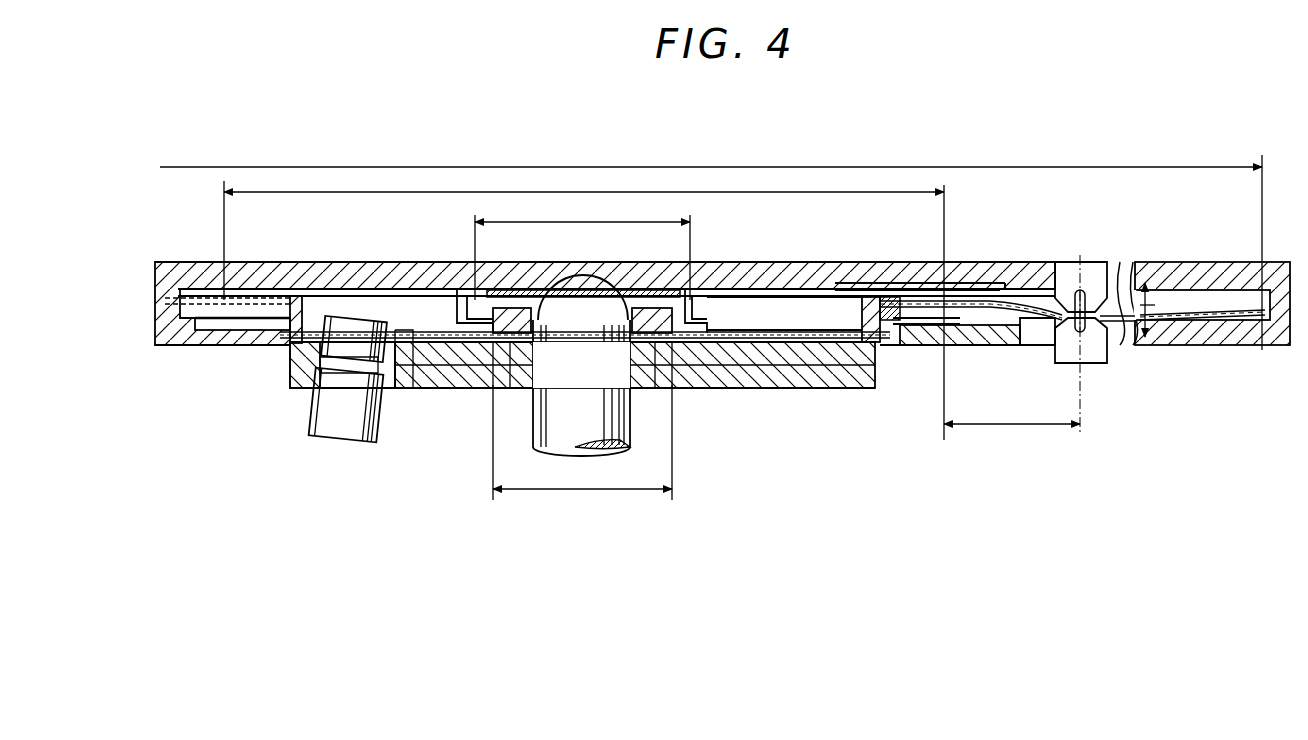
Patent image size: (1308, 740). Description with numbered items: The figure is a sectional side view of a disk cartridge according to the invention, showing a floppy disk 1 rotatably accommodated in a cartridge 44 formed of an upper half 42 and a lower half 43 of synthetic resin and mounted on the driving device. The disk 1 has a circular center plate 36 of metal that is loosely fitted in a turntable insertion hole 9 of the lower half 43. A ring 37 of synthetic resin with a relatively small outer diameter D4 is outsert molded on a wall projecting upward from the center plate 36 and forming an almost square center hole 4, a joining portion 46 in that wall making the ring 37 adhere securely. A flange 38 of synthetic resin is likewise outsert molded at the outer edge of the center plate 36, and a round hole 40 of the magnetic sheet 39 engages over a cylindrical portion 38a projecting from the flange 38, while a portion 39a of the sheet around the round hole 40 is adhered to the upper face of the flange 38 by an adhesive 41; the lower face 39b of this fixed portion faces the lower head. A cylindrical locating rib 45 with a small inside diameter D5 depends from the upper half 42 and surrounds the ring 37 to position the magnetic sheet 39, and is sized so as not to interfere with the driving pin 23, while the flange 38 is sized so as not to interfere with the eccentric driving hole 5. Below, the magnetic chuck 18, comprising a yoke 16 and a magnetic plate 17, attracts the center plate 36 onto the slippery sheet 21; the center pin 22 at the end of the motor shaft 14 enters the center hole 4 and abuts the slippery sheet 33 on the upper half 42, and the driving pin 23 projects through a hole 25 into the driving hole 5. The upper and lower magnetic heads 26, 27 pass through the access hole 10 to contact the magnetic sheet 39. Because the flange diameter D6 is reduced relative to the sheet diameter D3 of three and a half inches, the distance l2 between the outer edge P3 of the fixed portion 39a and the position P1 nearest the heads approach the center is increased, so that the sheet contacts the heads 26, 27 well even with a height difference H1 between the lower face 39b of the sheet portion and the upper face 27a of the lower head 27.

The floppy disk 1 is at (196, 308).
The center hole 4 is at (470, 300).
The eccentric driving hole 5 is at (403, 348).
The turntable insertion hole 9 is at (268, 330).
The access hole 10 is at (1032, 300).
The motor shaft 14 is at (548, 420).
The yoke 16 is at (848, 356).
The magnetic plate 17 is at (748, 372).
The magnetic chuck 18 is at (280, 395).
The slippery sheet 21 is at (455, 345).
The center pin 22 is at (580, 304).
The driving pin 23 is at (345, 322).
The hole 25 is at (318, 400).
The upper magnetic head 26 is at (1090, 275).
The lower magnetic head 27 is at (1095, 355).
The upper face of lower magnetic head 27a is at (1062, 343).
The slippery sheet 33 is at (650, 290).
The circular center plate 36 is at (793, 368).
The ring 37 is at (690, 368).
The flange 38 is at (230, 306).
The cylindrical portion 38a is at (300, 296).
The magnetic sheet 39 is at (1215, 306).
The fixed disk portion 39a is at (918, 300).
The tape portion 39b is at (922, 327).
The round hole 40 is at (870, 292).
The adhesive 41 is at (896, 332).
The upper half 42 is at (980, 284).
The lower half 43 is at (976, 340).
The cartridge 44 is at (1174, 364).
The locating rib 45 is at (716, 300).
The joining portion 46 is at (527, 336).
The height difference H1 is at (1200, 300).
The diameter of magnetic sheet D3 is at (822, 166).
The outer diameter of ring D4 is at (578, 490).
The inside diameter of locating rib D5 is at (572, 221).
The diameter of flange D6 is at (658, 191).
The distance l2 is at (1012, 426).
The position nearest heads approach center P1 is at (1082, 412).
The outer edge of fixed disk portion P3 is at (940, 410).